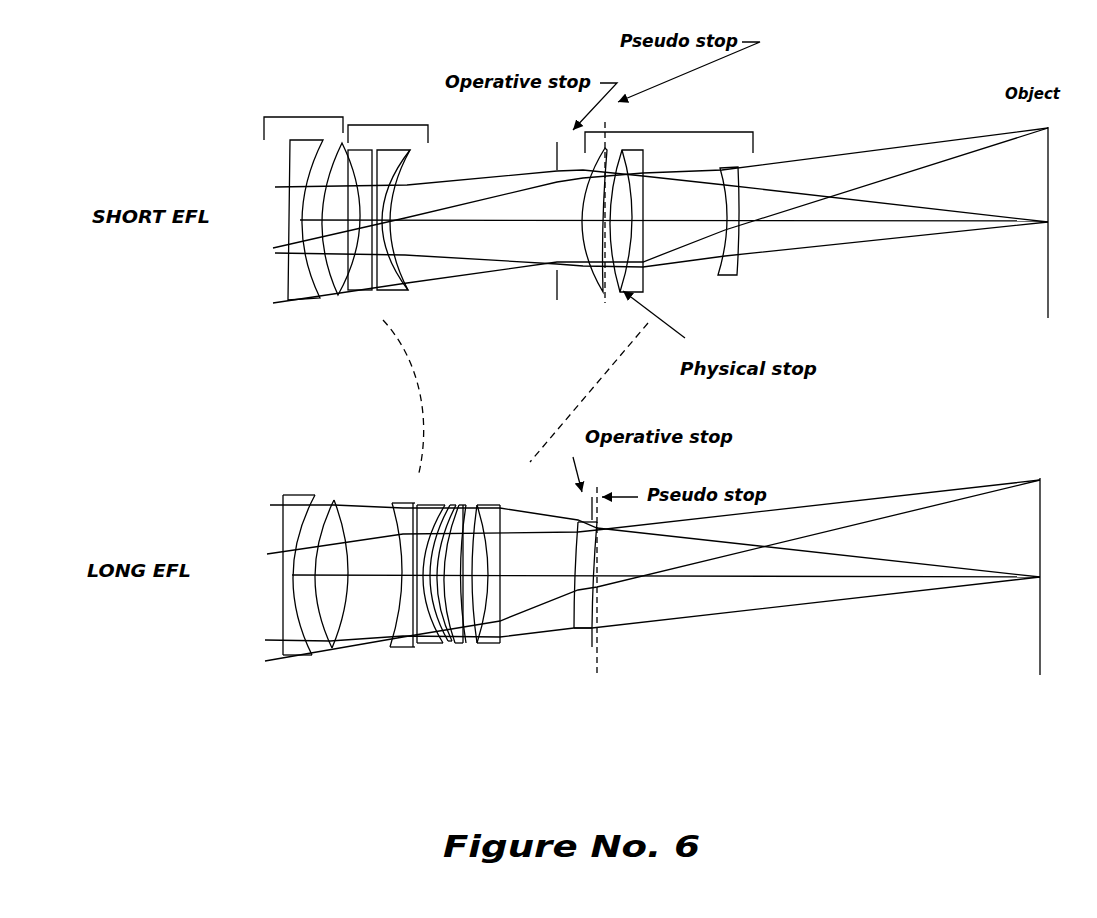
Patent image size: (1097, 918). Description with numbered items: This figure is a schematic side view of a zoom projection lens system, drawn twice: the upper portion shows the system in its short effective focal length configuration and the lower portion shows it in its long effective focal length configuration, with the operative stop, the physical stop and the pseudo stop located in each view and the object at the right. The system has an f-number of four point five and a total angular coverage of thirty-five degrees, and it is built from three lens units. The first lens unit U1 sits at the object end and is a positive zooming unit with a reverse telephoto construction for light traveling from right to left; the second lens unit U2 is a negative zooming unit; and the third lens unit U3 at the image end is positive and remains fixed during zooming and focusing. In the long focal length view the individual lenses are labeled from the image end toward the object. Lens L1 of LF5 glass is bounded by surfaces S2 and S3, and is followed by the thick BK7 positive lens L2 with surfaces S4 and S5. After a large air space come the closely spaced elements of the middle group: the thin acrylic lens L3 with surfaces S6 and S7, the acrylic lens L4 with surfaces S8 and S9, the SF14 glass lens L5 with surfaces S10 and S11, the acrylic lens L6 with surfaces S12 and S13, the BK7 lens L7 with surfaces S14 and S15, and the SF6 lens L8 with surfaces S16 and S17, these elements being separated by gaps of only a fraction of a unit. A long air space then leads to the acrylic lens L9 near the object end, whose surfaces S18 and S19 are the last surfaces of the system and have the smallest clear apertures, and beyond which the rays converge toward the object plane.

The first lens unit U1 is at (667, 197).
The second lens unit U2 is at (388, 196).
The third lens unit U3 is at (312, 197).
The lens element L1 is at (255, 629).
The lens element L2 is at (356, 629).
The lens element L3 is at (395, 604).
The lens element L4 is at (448, 588).
The lens element L5 is at (458, 498).
The lens element L6 is at (502, 587).
The lens element L7 is at (512, 574).
The lens element L8 is at (518, 560).
The lens element L9 is at (648, 574).
The lens surface S2 is at (272, 648).
The lens surface S3 is at (308, 649).
The lens surface S4 is at (330, 650).
The lens surface S5 is at (333, 650).
The lens surface S6 is at (392, 649).
The lens surface S7 is at (411, 649).
The lens surface S8 is at (416, 645).
The lens surface S9 is at (436, 645).
The lens surface S10 is at (450, 644).
The lens surface S11 is at (462, 645).
The lens surface S12 is at (478, 645).
The lens surface S13 is at (478, 634).
The lens surface S14 is at (503, 620).
The lens surface S15 is at (503, 602).
The lens surface S16 is at (507, 587).
The lens surface S17 is at (503, 570).
The lens surface S18 is at (594, 626).
The lens surface S19 is at (597, 608).